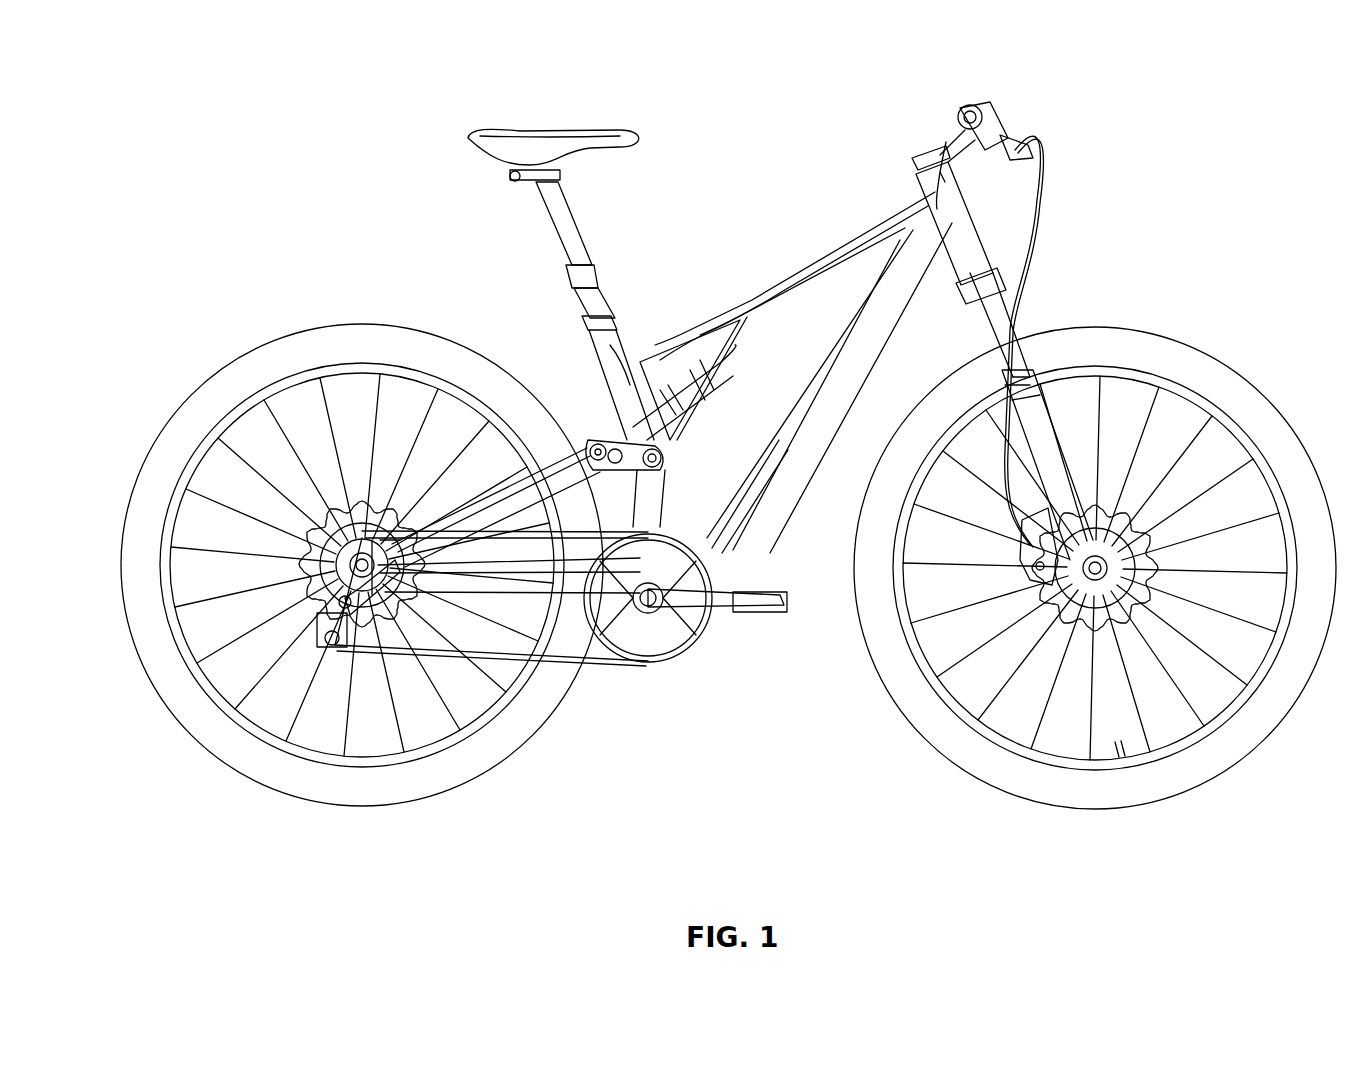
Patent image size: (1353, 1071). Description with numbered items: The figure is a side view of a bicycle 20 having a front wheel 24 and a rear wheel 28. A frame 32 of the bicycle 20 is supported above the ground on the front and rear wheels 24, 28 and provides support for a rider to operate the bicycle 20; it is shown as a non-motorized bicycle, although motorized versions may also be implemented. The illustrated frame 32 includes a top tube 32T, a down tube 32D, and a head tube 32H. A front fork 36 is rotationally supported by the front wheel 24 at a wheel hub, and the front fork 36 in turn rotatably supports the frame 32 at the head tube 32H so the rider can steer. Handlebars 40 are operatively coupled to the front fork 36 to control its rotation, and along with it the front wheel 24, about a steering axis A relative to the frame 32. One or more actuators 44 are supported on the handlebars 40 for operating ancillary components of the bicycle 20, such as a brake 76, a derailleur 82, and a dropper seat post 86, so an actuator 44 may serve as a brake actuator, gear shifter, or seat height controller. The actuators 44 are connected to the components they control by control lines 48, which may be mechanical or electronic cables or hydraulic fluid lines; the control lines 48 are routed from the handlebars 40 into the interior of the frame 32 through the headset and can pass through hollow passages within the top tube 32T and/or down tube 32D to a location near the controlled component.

The bicycle 20 is at (258, 238).
The front wheel 24 is at (1183, 388).
The rear wheel 28 is at (238, 410).
The frame 32 is at (861, 189).
The top tube 32T is at (783, 291).
The down tube 32D is at (800, 435).
The head tube 32H is at (937, 209).
The front fork 36 is at (983, 293).
The handlebars 40 is at (975, 97).
The actuators 44 is at (1003, 130).
The control lines 48 is at (947, 140).
The brake 76 is at (1040, 567).
The derailleur 82 is at (330, 625).
The dropper seat post 86 is at (572, 262).
The steering axis A is at (940, 172).